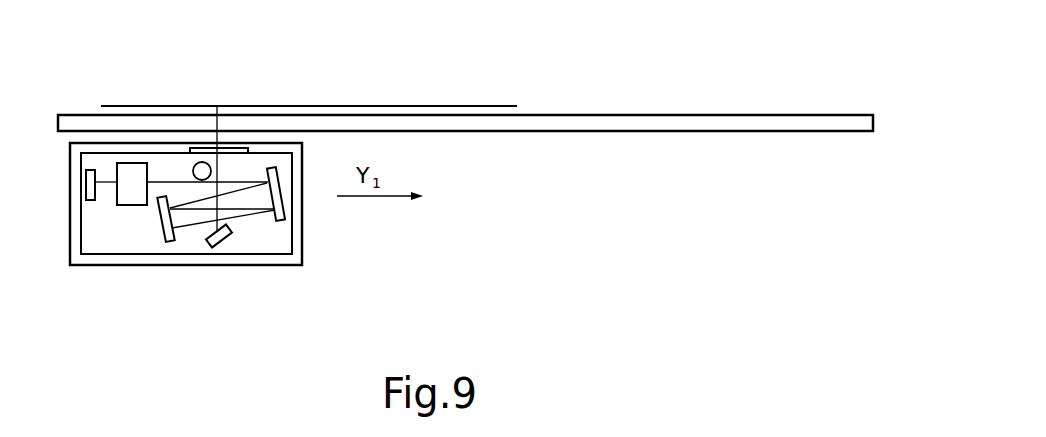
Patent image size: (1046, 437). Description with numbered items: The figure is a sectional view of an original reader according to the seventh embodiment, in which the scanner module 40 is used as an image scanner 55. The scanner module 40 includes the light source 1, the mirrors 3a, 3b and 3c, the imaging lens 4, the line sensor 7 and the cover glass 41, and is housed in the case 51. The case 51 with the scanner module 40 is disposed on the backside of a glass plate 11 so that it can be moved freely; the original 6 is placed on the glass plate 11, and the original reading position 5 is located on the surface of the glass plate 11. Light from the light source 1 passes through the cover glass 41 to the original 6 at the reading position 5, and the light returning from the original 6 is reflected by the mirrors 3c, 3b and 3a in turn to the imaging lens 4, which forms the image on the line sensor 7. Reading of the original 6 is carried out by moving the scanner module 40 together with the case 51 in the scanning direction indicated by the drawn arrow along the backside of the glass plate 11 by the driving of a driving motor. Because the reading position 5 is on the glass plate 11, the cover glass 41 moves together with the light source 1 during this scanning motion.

The image scanner 55 is at (212, 33).
The original reading position 5 is at (217, 106).
The cover glass 41 is at (235, 142).
The light source 1 is at (178, 158).
The original 6 is at (468, 106).
The glass plate 11 is at (733, 113).
The line sensor 7 is at (85, 173).
The imaging lens 4 is at (131, 203).
The mirror 3c is at (282, 205).
The mirror 3b is at (160, 242).
The mirror 3a is at (214, 247).
The scanner module 40 is at (257, 280).
The case 51 is at (102, 264).